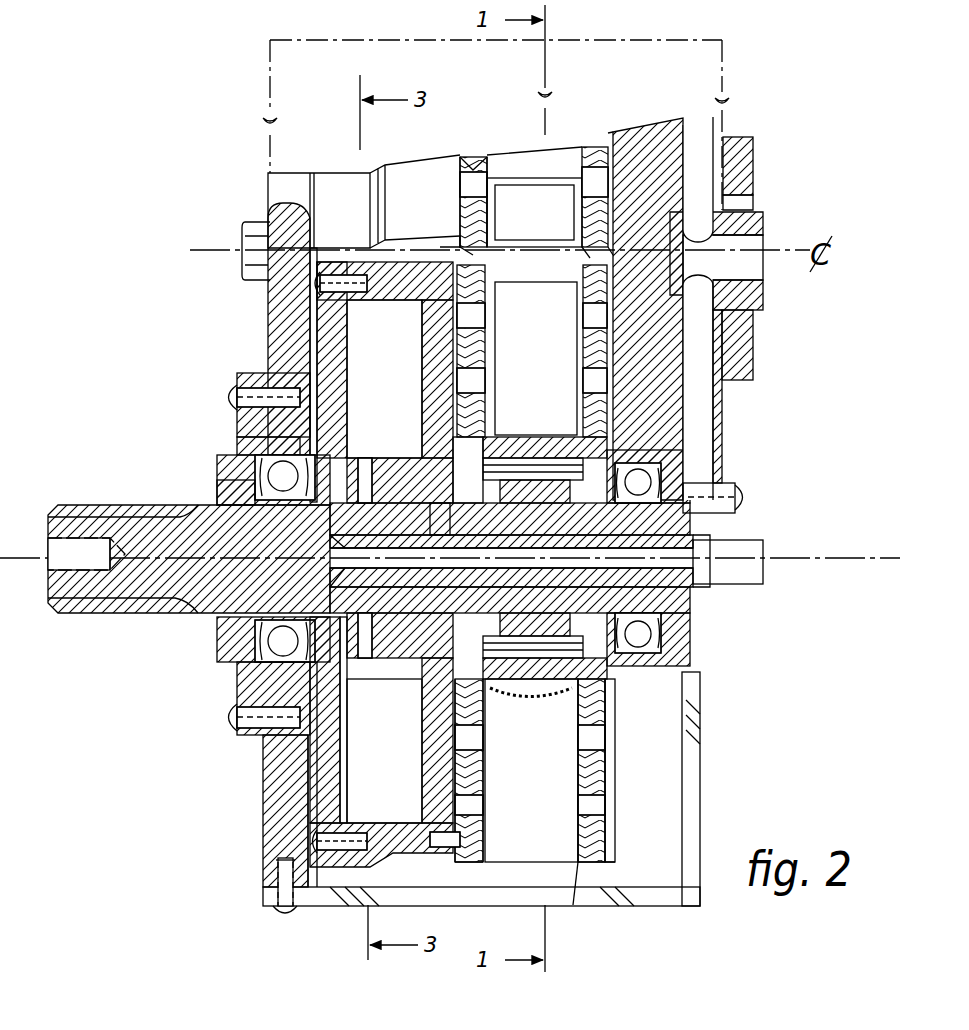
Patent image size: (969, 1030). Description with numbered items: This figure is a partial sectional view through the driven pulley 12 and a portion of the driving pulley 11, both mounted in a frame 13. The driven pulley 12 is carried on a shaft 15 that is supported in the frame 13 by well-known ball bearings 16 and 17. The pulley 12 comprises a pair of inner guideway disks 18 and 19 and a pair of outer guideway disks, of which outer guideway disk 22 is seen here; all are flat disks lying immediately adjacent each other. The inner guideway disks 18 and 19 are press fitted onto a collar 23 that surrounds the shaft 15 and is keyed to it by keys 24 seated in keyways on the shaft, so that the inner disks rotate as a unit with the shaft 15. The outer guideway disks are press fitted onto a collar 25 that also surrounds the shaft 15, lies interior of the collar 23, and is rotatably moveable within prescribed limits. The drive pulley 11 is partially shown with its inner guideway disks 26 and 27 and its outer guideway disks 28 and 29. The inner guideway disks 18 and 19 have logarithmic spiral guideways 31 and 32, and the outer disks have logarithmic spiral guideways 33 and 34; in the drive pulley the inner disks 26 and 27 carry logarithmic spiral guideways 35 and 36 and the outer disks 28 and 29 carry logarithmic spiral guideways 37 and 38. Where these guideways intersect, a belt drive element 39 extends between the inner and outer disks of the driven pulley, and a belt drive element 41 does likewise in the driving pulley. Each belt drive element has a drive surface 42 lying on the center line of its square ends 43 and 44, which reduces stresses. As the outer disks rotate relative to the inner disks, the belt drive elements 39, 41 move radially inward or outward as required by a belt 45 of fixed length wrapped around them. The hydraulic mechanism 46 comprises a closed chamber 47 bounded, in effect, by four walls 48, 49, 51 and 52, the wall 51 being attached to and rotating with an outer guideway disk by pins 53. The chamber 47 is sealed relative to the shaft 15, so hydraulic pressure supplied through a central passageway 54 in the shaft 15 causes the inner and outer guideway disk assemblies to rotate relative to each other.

The driving pulley 11 is at (532, 344).
The driven pulley 12 is at (612, 833).
The frame 13 is at (703, 788).
The shaft 15 is at (188, 600).
The ball bearing 16 is at (266, 476).
The ball bearing 17 is at (716, 475).
The inner guideway disk 18 is at (480, 868).
The inner guideway disk 19 is at (582, 868).
The outer guideway disk 22 is at (610, 860).
The collar 23 is at (493, 645).
The key 24 is at (556, 510).
The collar 25 is at (448, 494).
The inner guideway disk 26 is at (480, 250).
The inner guideway disk 27 is at (588, 254).
The outer guideway disk 28 is at (462, 243).
The outer guideway disk 29 is at (612, 250).
The logarithmic spiral guideway 31 is at (485, 803).
The logarithmic spiral guideway 32 is at (578, 803).
The logarithmic spiral guideway 33 is at (483, 798).
The logarithmic spiral guideway 34 is at (607, 803).
The logarithmic spiral guideway 35 is at (480, 178).
The logarithmic spiral guideway 36 is at (590, 176).
The logarithmic spiral guideway 37 is at (468, 172).
The logarithmic spiral guideway 38 is at (608, 176).
The belt drive element 39 is at (500, 693).
The belt drive element 41 is at (512, 437).
The drive surface 42 is at (536, 437).
The square end 43 is at (600, 438).
The square end 44 is at (463, 428).
The belt 45 is at (555, 217).
The hydraulic mechanism 46 is at (306, 333).
The closed chamber 47 is at (384, 379).
The wall 48 is at (338, 346).
The wall 49 is at (392, 282).
The wall 51 is at (436, 398).
The wall 52 is at (370, 462).
The pin 53 is at (426, 278).
The central passageway 54 is at (706, 560).